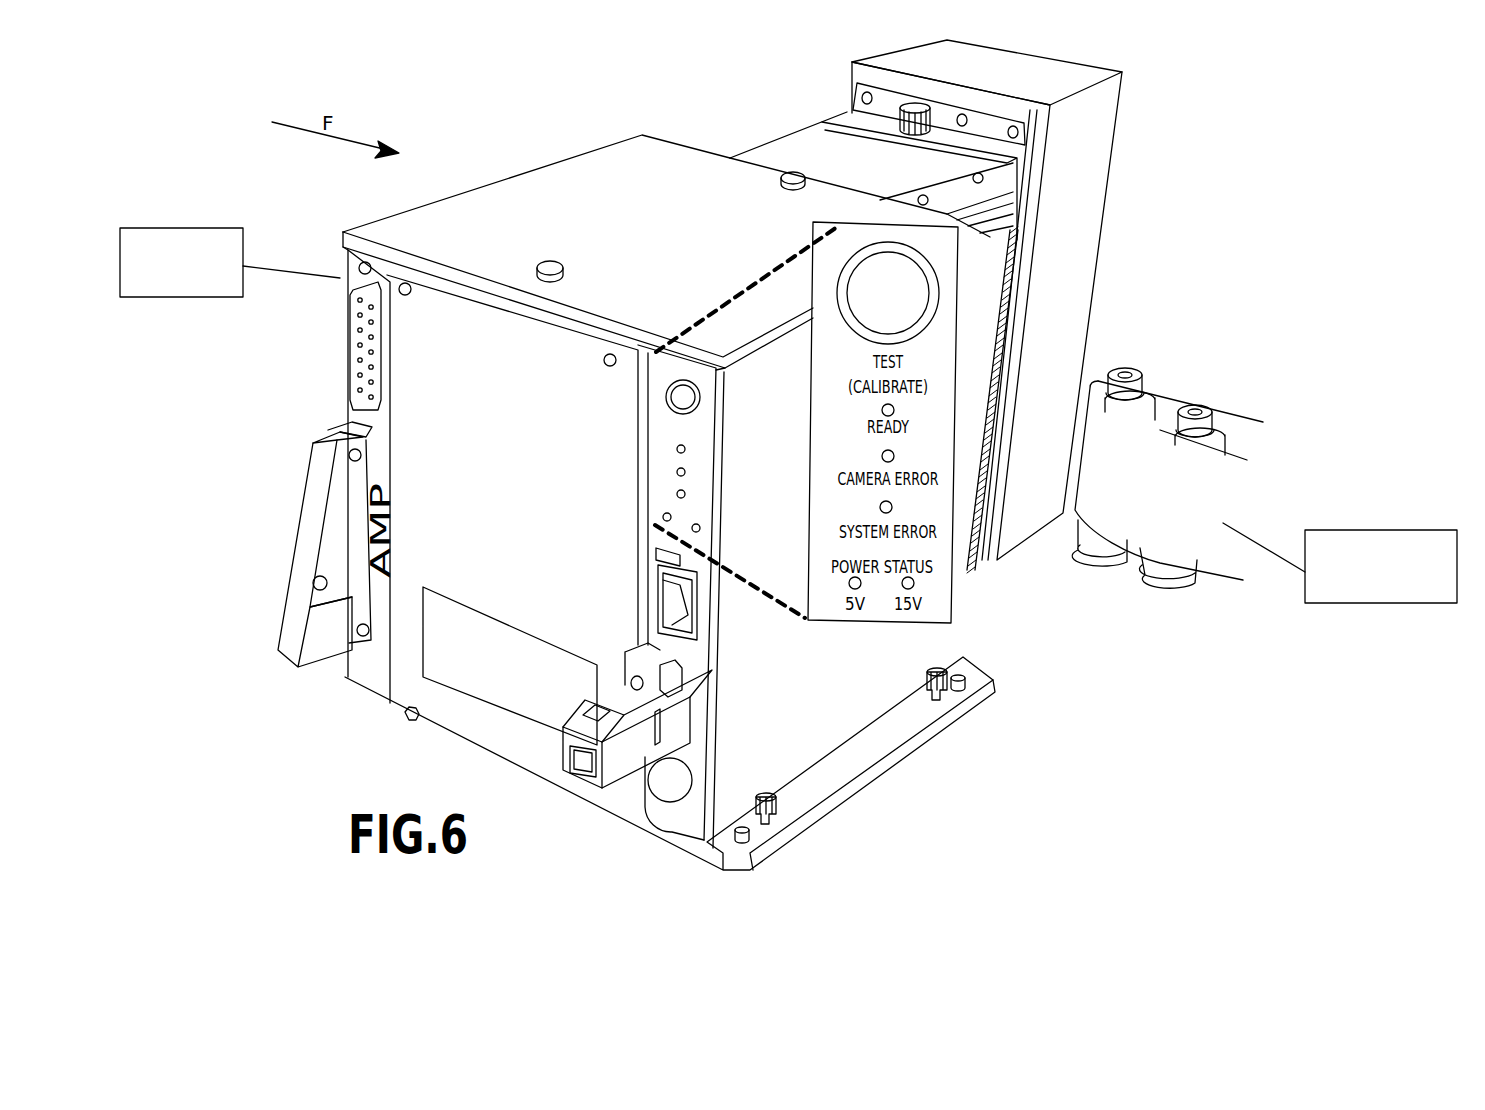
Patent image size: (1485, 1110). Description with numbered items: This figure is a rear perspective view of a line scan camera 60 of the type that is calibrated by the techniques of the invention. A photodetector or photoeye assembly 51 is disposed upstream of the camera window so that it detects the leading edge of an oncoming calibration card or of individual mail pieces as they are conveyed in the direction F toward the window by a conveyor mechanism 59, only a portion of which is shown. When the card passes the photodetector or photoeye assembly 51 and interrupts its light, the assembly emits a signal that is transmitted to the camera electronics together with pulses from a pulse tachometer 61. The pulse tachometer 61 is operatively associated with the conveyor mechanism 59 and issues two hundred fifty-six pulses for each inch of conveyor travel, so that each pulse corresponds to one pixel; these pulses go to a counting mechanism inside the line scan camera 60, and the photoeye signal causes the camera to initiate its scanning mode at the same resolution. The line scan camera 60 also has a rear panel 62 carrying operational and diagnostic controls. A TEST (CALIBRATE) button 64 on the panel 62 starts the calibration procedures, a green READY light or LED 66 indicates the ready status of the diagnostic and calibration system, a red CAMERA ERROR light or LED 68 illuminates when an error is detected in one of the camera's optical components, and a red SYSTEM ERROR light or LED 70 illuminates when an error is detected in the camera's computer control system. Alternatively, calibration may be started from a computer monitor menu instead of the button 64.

The photodetector or photoeye assembly 51 is at (183, 298).
The conveyor mechanism 59 is at (1230, 492).
The line scan camera 60 is at (1188, 155).
The pulse tachometer 61 is at (1384, 603).
The rear panel 62 is at (706, 652).
The TEST (CALIBRATE) button 64 is at (937, 300).
The READY light or LED 66 is at (897, 410).
The CAMERA ERROR light or LED 68 is at (897, 456).
The SYSTEM ERROR light or LED 70 is at (892, 507).